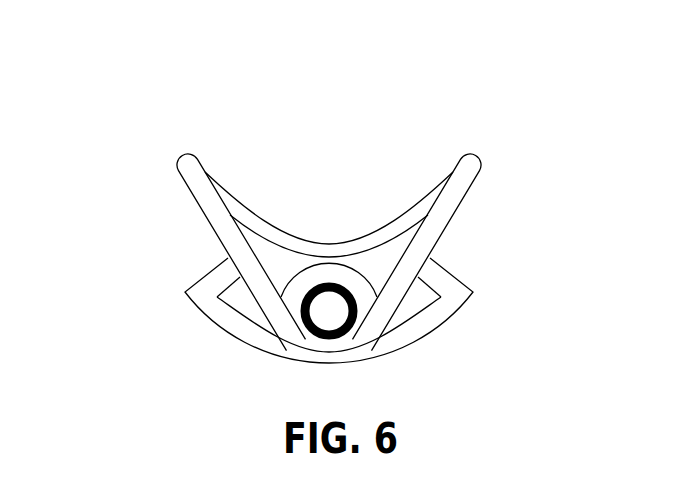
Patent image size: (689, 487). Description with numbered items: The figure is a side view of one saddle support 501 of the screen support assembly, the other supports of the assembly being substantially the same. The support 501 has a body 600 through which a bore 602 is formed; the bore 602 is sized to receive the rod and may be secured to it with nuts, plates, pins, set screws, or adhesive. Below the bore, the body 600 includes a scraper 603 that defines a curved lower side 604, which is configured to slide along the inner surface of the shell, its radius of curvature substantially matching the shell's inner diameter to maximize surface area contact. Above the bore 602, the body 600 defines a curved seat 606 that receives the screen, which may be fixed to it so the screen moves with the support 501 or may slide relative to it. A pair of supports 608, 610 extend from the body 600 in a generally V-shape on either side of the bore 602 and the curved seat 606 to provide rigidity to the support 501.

The support 501 is at (188, 90).
The body 600 is at (452, 197).
The bore 602 is at (308, 352).
The scraper 603 is at (468, 288).
The curved lower side 604 is at (417, 340).
The curved seat 606 is at (388, 236).
The support 608 is at (445, 227).
The support 610 is at (186, 180).